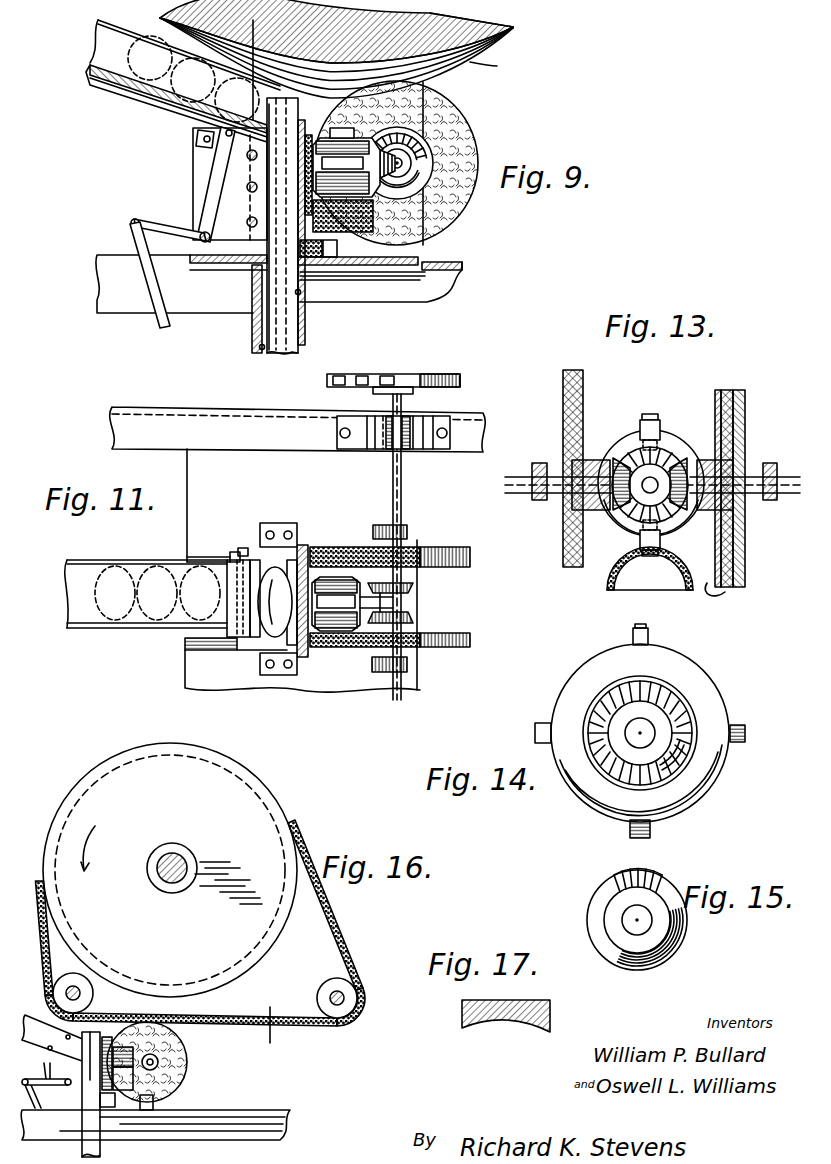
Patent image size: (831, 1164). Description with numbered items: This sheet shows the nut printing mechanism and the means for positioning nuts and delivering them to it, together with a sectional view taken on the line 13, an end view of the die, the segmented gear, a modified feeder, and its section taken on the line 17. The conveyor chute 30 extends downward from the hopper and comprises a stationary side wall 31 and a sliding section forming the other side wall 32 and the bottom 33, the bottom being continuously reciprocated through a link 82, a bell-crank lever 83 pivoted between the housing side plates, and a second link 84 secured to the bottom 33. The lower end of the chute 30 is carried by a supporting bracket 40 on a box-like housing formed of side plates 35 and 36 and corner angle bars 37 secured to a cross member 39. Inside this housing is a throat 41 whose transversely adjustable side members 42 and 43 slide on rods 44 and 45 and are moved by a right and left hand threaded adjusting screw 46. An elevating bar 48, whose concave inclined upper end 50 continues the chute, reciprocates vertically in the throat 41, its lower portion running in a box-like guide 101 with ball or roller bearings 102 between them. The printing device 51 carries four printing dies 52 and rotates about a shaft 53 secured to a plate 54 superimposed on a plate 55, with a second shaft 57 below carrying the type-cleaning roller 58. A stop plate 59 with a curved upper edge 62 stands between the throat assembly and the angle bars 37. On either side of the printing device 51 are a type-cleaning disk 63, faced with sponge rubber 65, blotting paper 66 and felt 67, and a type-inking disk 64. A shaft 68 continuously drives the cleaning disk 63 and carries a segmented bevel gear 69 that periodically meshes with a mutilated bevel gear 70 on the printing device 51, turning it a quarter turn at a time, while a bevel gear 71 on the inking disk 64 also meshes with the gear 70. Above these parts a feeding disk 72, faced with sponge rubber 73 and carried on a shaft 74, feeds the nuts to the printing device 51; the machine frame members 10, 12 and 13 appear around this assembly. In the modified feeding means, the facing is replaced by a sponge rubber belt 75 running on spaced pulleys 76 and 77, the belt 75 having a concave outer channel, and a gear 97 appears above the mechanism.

In FIG. 9, the frame casing 10 is at (305, 101).
In FIG. 9, the grinding wheel 12 is at (255, 27).
In FIG. 9, the frame 13 is at (440, 79).
In FIG. 16, the section line 17 is at (268, 1029).
In FIG. 9, the conveyor chute 30 is at (93, 45).
In FIG. 11, the conveyor chute 30 is at (92, 629).
In FIG. 9, the stationary side wall 31 is at (125, 36).
In FIG. 11, the stationary side wall 31 is at (119, 562).
In FIG. 11, the side wall 32 is at (140, 627).
In FIG. 9, the bottom 33 is at (106, 80).
In FIG. 11, the bottom 33 is at (83, 597).
In FIG. 11, the side plate 35 is at (205, 644).
In FIG. 9, the side plate 36 is at (201, 172).
In FIG. 11, the side plate 36 is at (205, 556).
In FIG. 11, the corner angle bar 37 is at (300, 540).
In FIG. 9, the supporting plate or cross member 39 is at (206, 264).
In FIG. 9, the supporting bracket 40 is at (195, 130).
In FIG. 9, the throat 41 is at (222, 78).
In FIG. 11, the throat 41 is at (224, 599).
In FIG. 11, the adjustable side member 42 is at (240, 625).
In FIG. 9, the adjustable side member 43 is at (243, 142).
In FIG. 11, the adjustable side member 43 is at (232, 562).
In FIG. 9, the rod or bolt 44 is at (246, 156).
In FIG. 11, the rod or bolt 44 is at (243, 548).
In FIG. 9, the rod or bolt 45 is at (246, 222).
In FIG. 9, the adjusting screw 46 is at (247, 189).
In FIG. 9, the elevating rod or bar 48 is at (276, 275).
In FIG. 9, the inclined concave upper end 50 is at (282, 226).
In FIG. 11, the inclined concave upper end 50 is at (272, 630).
In FIG. 9, the rotary printing device 51 is at (364, 148).
In FIG. 11, the rotary printing device 51 is at (325, 588).
In FIG. 13, the rotary printing device 51 is at (633, 444).
In FIG. 14, the rotary printing device 51 is at (597, 793).
In FIG. 9, the printing die 52 is at (355, 137).
In FIG. 11, the printing die 52 is at (345, 598).
In FIG. 13, the printing die 52 is at (652, 418).
In FIG. 14, the printing die 52 is at (542, 720).
In FIG. 9, the shaft 53 is at (342, 155).
In FIG. 11, the plate 54 is at (308, 655).
In FIG. 11, the plate 55 is at (292, 660).
In FIG. 9, the shaft 57 is at (312, 220).
In FIG. 9, the type-cleaning roller 58 is at (352, 234).
In FIG. 13, the type-cleaning roller 58 is at (667, 582).
In FIG. 11, the stop plate 59 is at (300, 545).
In FIG. 11, the curved or recessed upper edge 62 is at (278, 568).
In FIG. 11, the type-cleaning disk 63 is at (445, 550).
In FIG. 13, the type-cleaning disk 63 is at (745, 528).
In FIG. 11, the type-inking disk 64 is at (445, 648).
In FIG. 13, the type-inking disk 64 is at (565, 520).
In FIG. 13, the layer of sponge rubber 65 is at (745, 548).
In FIG. 13, the disk of blotting paper 66 is at (745, 568).
In FIG. 9, the felt facing 67 is at (455, 133).
In FIG. 11, the felt facing 67 is at (446, 568).
In FIG. 13, the felt facing 67 is at (710, 586).
In FIG. 9, the shaft 68 is at (410, 170).
In FIG. 11, the shaft 68 is at (403, 497).
In FIG. 13, the shaft 68 is at (796, 483).
In FIG. 9, the segmented bevel gear 69 is at (414, 160).
In FIG. 11, the segmented bevel gear 69 is at (413, 589).
In FIG. 13, the segmented bevel gear 69 is at (683, 525).
In FIG. 15, the segmented bevel gear 69 is at (684, 928).
In FIG. 9, the mutilated bevel gear 70 is at (400, 205).
In FIG. 11, the mutilated bevel gear 70 is at (395, 603).
In FIG. 13, the mutilated bevel gear 70 is at (660, 460).
In FIG. 14, the mutilated bevel gear 70 is at (675, 752).
In FIG. 11, the bevel gear 71 is at (414, 618).
In FIG. 13, the bevel gear 71 is at (620, 458).
In FIG. 9, the feeding disk or cylinder 72 is at (503, 24).
In FIG. 16, the feeding disk or cylinder 72 is at (265, 812).
In FIG. 9, the sponge rubber facing 73 is at (495, 68).
In FIG. 16, the shaft 74 is at (183, 860).
In FIG. 16, the belt 75 is at (328, 937).
In FIG. 17, the belt 75 is at (502, 1020).
In FIG. 16, the pulley 76 is at (92, 997).
In FIG. 16, the pulley 77 is at (353, 1007).
In FIG. 9, the link 82 is at (160, 322).
In FIG. 9, the bell-crank lever 83 is at (142, 206).
In FIG. 9, the second link 84 is at (126, 92).
In FIG. 11, the hand wheel 97 is at (422, 388).
In FIG. 9, the box-like guide 101 is at (254, 327).
In FIG. 9, the ball or roller bearings 102 is at (294, 294).